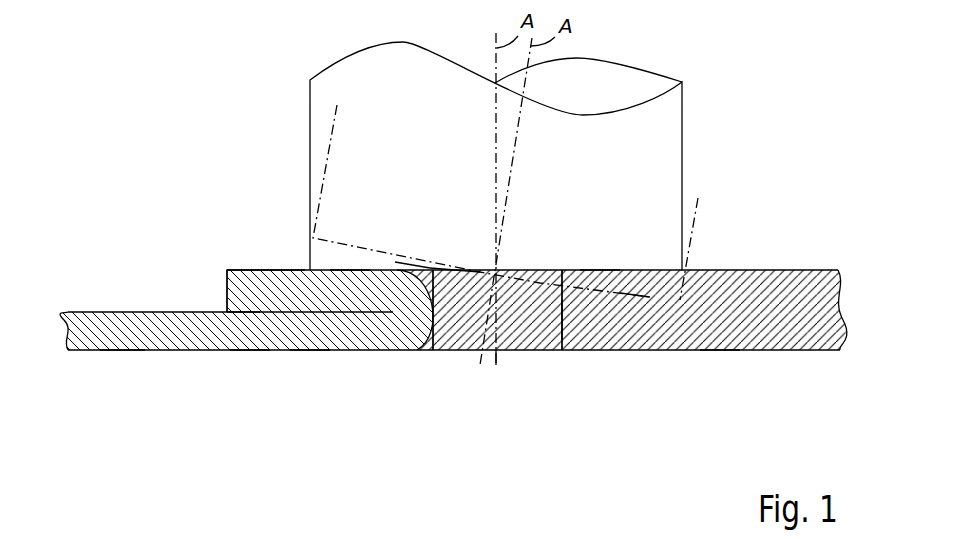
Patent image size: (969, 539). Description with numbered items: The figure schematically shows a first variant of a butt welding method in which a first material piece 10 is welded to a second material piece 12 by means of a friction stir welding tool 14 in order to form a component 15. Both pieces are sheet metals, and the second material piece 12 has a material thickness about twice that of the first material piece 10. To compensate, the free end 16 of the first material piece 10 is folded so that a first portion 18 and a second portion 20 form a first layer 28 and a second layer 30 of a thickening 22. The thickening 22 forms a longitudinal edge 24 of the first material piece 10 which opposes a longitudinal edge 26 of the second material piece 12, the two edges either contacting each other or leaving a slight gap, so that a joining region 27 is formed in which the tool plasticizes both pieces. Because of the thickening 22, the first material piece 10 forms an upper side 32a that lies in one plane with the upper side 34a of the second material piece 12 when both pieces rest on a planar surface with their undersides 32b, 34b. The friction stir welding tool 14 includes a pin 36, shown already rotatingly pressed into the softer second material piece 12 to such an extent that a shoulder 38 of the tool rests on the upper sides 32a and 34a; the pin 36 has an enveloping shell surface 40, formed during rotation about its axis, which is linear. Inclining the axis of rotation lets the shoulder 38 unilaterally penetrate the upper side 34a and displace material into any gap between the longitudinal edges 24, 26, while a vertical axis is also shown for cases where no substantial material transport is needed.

The first material piece 10 is at (88, 350).
The second material piece 12 is at (662, 340).
The friction stir welding tool 14 is at (668, 118).
The component 15 is at (520, 396).
The free end 16 is at (240, 364).
The first portion 18 is at (247, 350).
The second portion 20 is at (243, 281).
The thickening 22 is at (360, 364).
The longitudinal edge 24 is at (413, 262).
The longitudinal edge 26 is at (425, 358).
The joining region 27 is at (441, 262).
The first layer 28 is at (302, 350).
The second layer 30 is at (283, 281).
The upper side 32a is at (350, 266).
The underside 32b is at (123, 354).
The upper side 34a is at (597, 266).
The underside 34b is at (722, 354).
The pin 36 is at (563, 345).
The shoulder 38 is at (650, 280).
The enveloping shell surface 40 is at (566, 318).